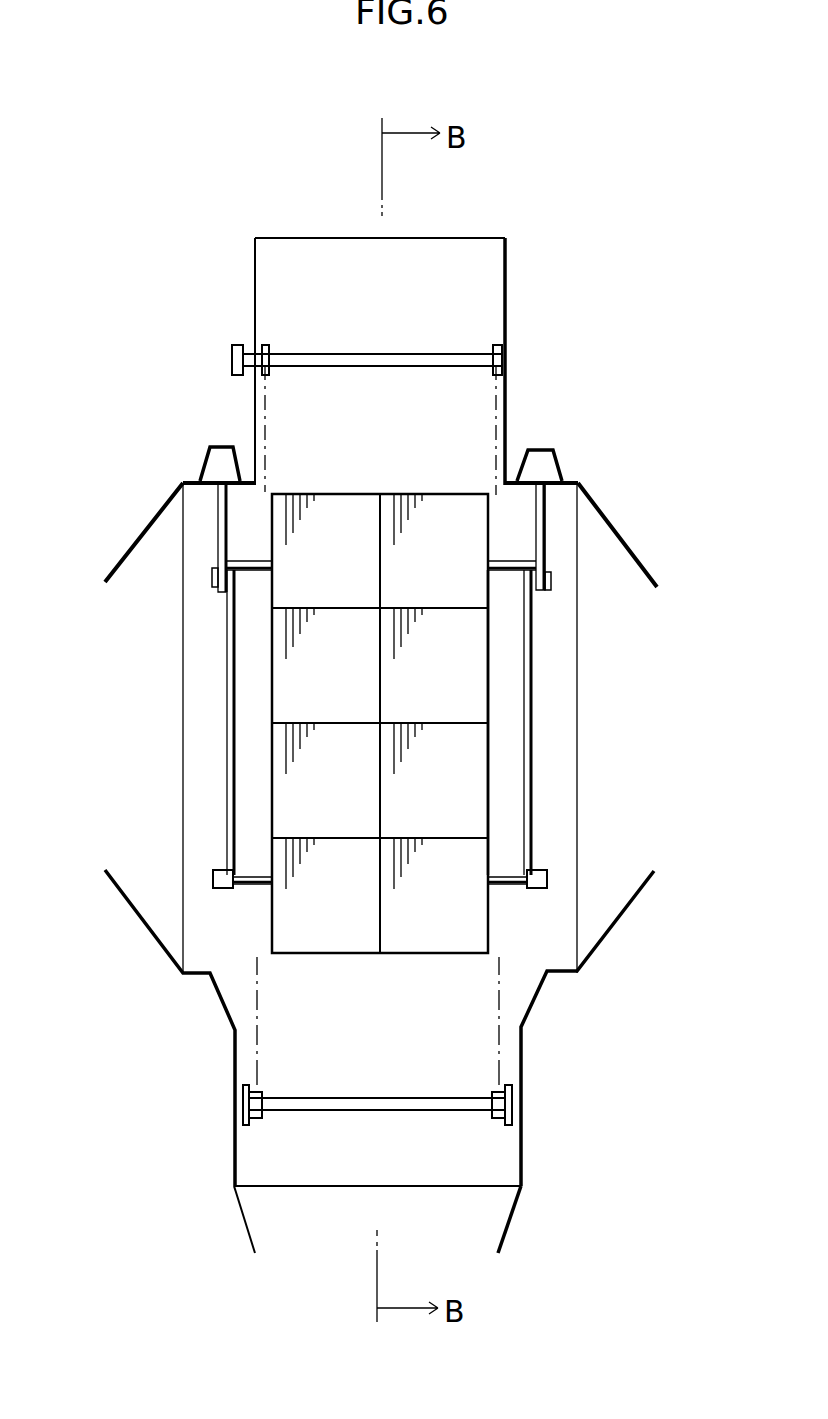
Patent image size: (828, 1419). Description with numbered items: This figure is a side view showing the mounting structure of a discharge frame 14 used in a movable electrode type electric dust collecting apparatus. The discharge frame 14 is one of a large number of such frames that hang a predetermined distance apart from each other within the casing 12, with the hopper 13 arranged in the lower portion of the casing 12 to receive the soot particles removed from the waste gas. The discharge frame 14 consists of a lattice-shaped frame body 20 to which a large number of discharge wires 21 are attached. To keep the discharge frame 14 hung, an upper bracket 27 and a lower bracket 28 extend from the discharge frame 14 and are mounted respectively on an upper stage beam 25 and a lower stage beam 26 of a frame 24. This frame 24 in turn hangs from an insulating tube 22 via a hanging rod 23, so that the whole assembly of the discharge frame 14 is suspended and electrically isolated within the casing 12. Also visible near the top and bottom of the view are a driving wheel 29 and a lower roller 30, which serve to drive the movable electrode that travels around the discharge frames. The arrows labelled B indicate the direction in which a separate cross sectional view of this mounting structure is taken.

The casing 12 is at (477, 402).
The hopper 13 is at (510, 1222).
The discharge frame 14 is at (463, 698).
The frame body 20 is at (488, 785).
The discharge wire 21 is at (283, 655).
The insulating tube 22 is at (560, 463).
The hanging rod 23 is at (546, 525).
The frame 24 is at (535, 655).
The upper stage beam 25 is at (549, 590).
The lower stage beam 26 is at (543, 878).
The upper bracket 27 is at (252, 560).
The lower bracket 28 is at (255, 877).
The driving wheel 29 is at (503, 355).
The lower roller 30 is at (512, 1103).